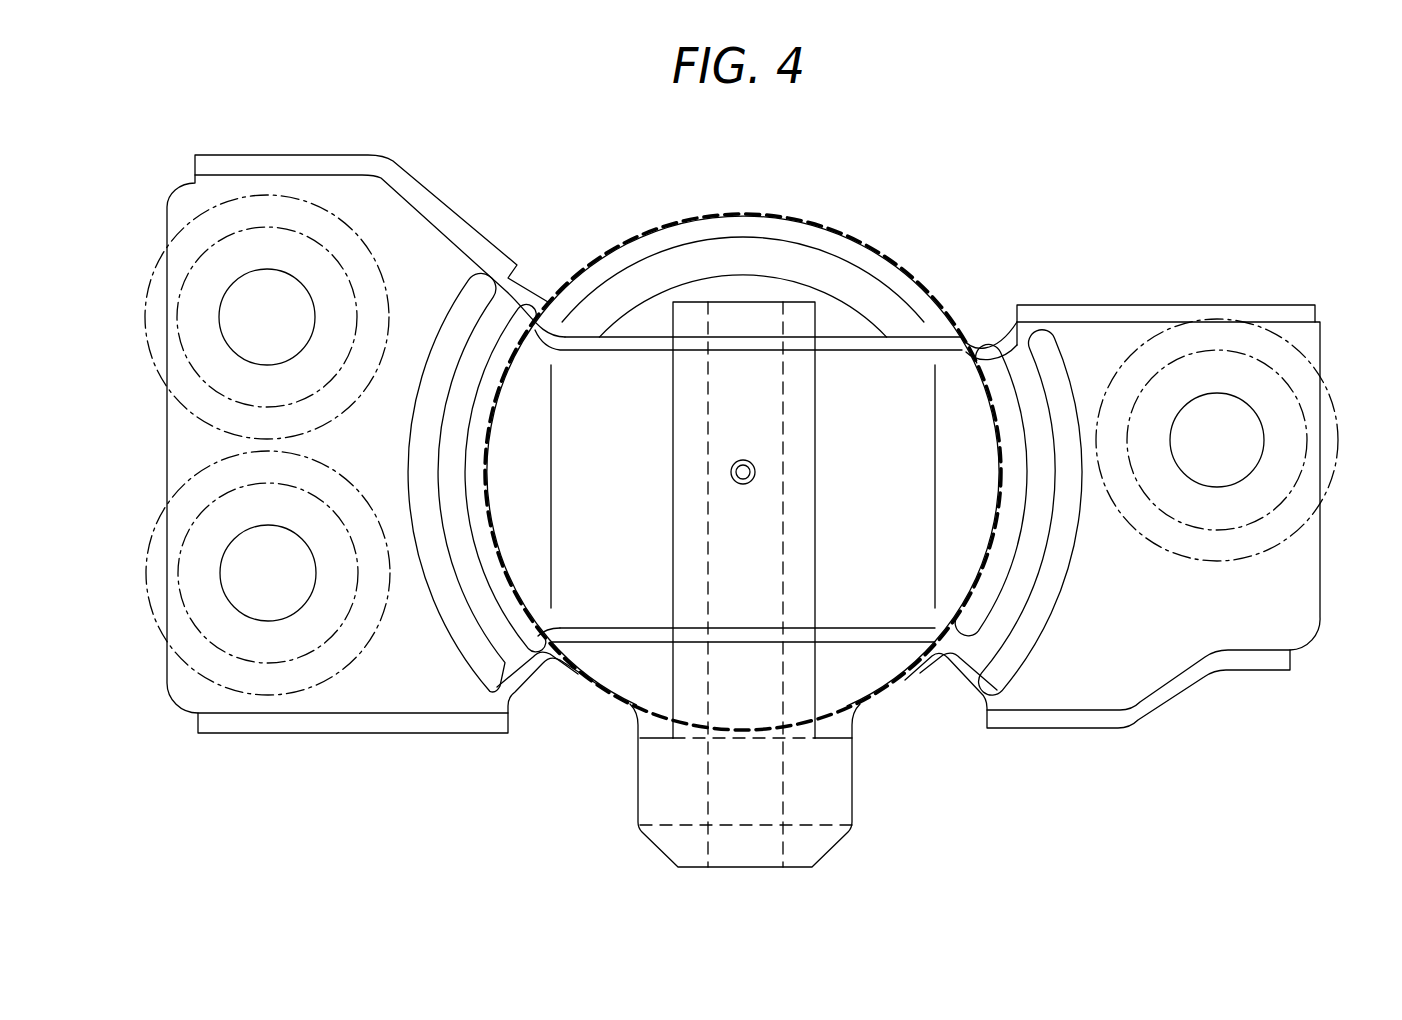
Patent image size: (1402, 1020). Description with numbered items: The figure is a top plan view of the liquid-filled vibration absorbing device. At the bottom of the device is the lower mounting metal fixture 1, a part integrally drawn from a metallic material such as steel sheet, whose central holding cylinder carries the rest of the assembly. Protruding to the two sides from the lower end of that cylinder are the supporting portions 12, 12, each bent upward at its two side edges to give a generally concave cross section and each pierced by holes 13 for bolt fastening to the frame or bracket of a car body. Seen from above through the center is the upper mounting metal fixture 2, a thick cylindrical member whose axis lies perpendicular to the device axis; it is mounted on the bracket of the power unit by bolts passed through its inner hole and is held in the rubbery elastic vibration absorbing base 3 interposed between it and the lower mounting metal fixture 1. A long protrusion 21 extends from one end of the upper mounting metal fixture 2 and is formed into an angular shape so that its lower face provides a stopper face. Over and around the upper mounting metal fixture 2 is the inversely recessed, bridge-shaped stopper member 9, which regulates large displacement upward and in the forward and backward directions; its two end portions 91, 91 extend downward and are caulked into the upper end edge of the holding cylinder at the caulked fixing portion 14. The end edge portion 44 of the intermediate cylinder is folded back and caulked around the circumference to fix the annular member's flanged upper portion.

The lower mounting metal fixture 1 is at (1242, 303).
The upper mounting metal fixture 2 is at (797, 314).
The vibration absorbing base 3 is at (647, 333).
The stopper member 9 is at (845, 340).
The supporting portion 12 is at (383, 680).
The hole for bolt fastening 13 is at (255, 342).
The caulked fixing portion 14 is at (452, 620).
The protrusion 21 is at (838, 795).
The end edge portion 44 is at (790, 228).
The end portion 91 is at (485, 605).